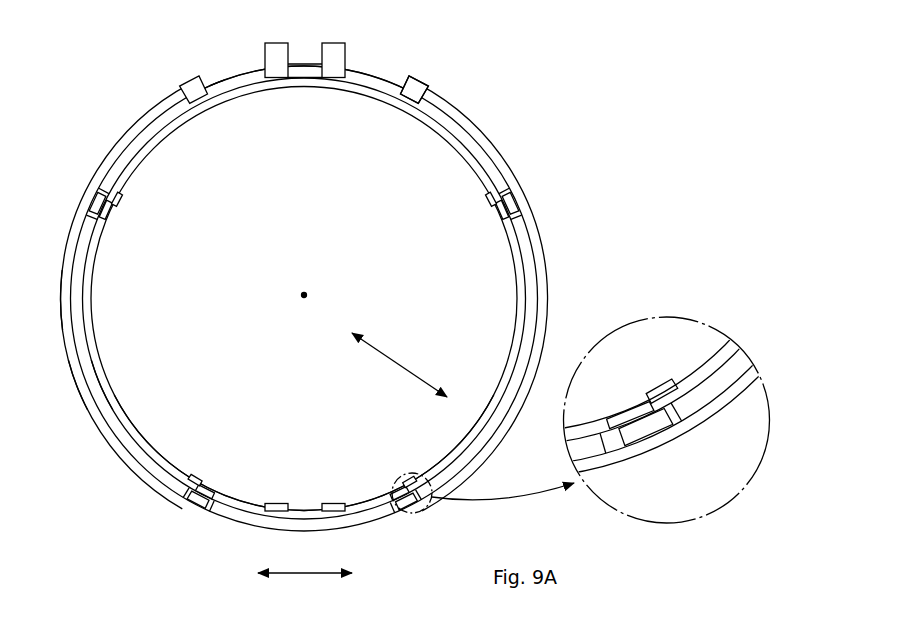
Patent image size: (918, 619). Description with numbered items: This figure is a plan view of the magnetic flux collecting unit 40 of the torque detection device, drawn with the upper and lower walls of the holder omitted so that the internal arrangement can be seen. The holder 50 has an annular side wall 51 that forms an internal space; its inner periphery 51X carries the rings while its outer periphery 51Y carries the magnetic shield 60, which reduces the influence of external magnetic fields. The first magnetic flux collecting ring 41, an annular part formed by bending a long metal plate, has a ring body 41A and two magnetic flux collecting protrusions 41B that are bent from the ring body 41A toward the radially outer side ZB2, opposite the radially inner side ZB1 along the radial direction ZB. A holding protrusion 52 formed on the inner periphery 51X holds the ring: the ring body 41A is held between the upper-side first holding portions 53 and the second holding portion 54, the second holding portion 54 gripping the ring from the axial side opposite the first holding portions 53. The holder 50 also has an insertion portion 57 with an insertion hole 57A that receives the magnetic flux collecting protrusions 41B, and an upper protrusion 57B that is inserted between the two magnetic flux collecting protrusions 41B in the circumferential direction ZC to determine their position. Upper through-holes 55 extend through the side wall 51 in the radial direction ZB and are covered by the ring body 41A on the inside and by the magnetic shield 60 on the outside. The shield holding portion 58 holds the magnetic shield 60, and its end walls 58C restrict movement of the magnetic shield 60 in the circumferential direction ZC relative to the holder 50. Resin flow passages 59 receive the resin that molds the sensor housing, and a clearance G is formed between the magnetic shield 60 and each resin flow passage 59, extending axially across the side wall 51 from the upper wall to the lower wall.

The magnetic flux collecting unit 40 is at (112, 47).
The first magnetic flux collecting ring 41 is at (185, 124).
The ring body 41A is at (245, 88).
The magnetic flux collecting protrusions 41B is at (278, 47).
The holder 50 is at (70, 266).
The side wall 51 is at (70, 298).
The inner periphery 51X is at (102, 382).
The outer periphery 51Y is at (83, 386).
The holding protrusion 52 is at (259, 454).
The first holding portions 53 is at (112, 192).
The second holding portion 54 is at (283, 503).
The upper through-holes 55 is at (105, 213).
The insertion portion 57 is at (385, 64).
The insertion hole 57A is at (210, 88).
The upper protrusion 57B is at (308, 80).
The shield holding portion 58 is at (422, 70).
The end walls 58C is at (186, 82).
The resin flow passages 59 is at (92, 199).
The magnetic shield 60 is at (62, 325).
The clearance G is at (101, 185).
The radial direction ZB is at (399, 365).
The radially inner side ZB1 is at (330, 308).
The radially outer side ZB2 is at (443, 408).
The circumferential direction ZC is at (305, 561).